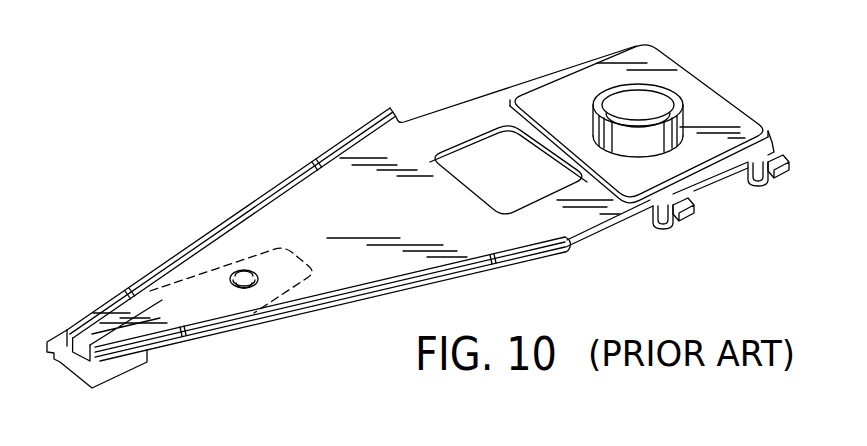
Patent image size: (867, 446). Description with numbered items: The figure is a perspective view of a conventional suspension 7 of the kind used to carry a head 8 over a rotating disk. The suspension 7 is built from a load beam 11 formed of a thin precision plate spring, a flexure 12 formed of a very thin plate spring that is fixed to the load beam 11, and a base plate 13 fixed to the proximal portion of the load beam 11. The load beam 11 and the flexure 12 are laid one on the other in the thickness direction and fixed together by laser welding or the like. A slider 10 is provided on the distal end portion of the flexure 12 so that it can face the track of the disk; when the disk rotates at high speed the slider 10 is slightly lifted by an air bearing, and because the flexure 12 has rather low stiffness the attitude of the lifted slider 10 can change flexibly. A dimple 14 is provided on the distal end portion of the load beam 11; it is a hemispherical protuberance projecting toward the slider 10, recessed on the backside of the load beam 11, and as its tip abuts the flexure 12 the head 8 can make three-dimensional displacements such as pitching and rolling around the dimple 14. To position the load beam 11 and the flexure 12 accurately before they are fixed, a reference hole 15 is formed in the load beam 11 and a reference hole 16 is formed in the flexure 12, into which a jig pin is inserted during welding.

The suspension 7 is at (306, 124).
The head 8 is at (136, 367).
The slider 10 is at (88, 388).
The load beam 11 is at (271, 223).
The flexure 12 is at (178, 272).
The base plate 13 is at (563, 94).
The dimple 14 is at (97, 314).
The reference hole 15 is at (235, 267).
The reference hole 16 is at (251, 288).